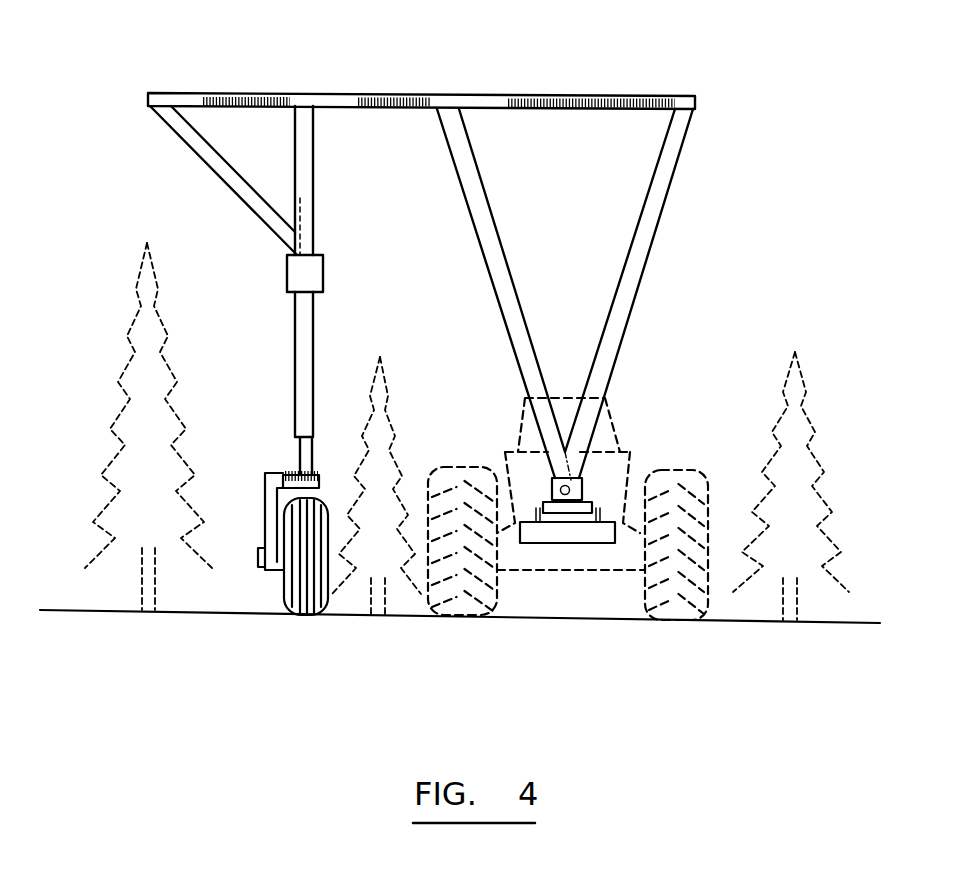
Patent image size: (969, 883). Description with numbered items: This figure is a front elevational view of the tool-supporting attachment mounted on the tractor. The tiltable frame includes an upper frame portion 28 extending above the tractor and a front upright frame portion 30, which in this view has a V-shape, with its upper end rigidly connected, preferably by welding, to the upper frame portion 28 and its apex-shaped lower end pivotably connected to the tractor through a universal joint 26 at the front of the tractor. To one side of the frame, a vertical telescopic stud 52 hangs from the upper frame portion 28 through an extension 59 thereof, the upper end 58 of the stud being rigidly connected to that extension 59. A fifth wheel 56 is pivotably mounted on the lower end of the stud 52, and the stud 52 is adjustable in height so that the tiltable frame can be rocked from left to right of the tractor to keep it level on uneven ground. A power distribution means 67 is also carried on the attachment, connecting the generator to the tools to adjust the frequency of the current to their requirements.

The universal joint 26 is at (583, 495).
The upper frame portion 28 is at (490, 102).
The front upright frame portion 30 is at (640, 255).
The vertical telescopic stud 52 is at (305, 330).
The fifth wheel 56 is at (327, 608).
The upper end of vertical stud 58 is at (303, 138).
The extension of upper frame 59 is at (252, 93).
The power distribution means 67 is at (314, 275).